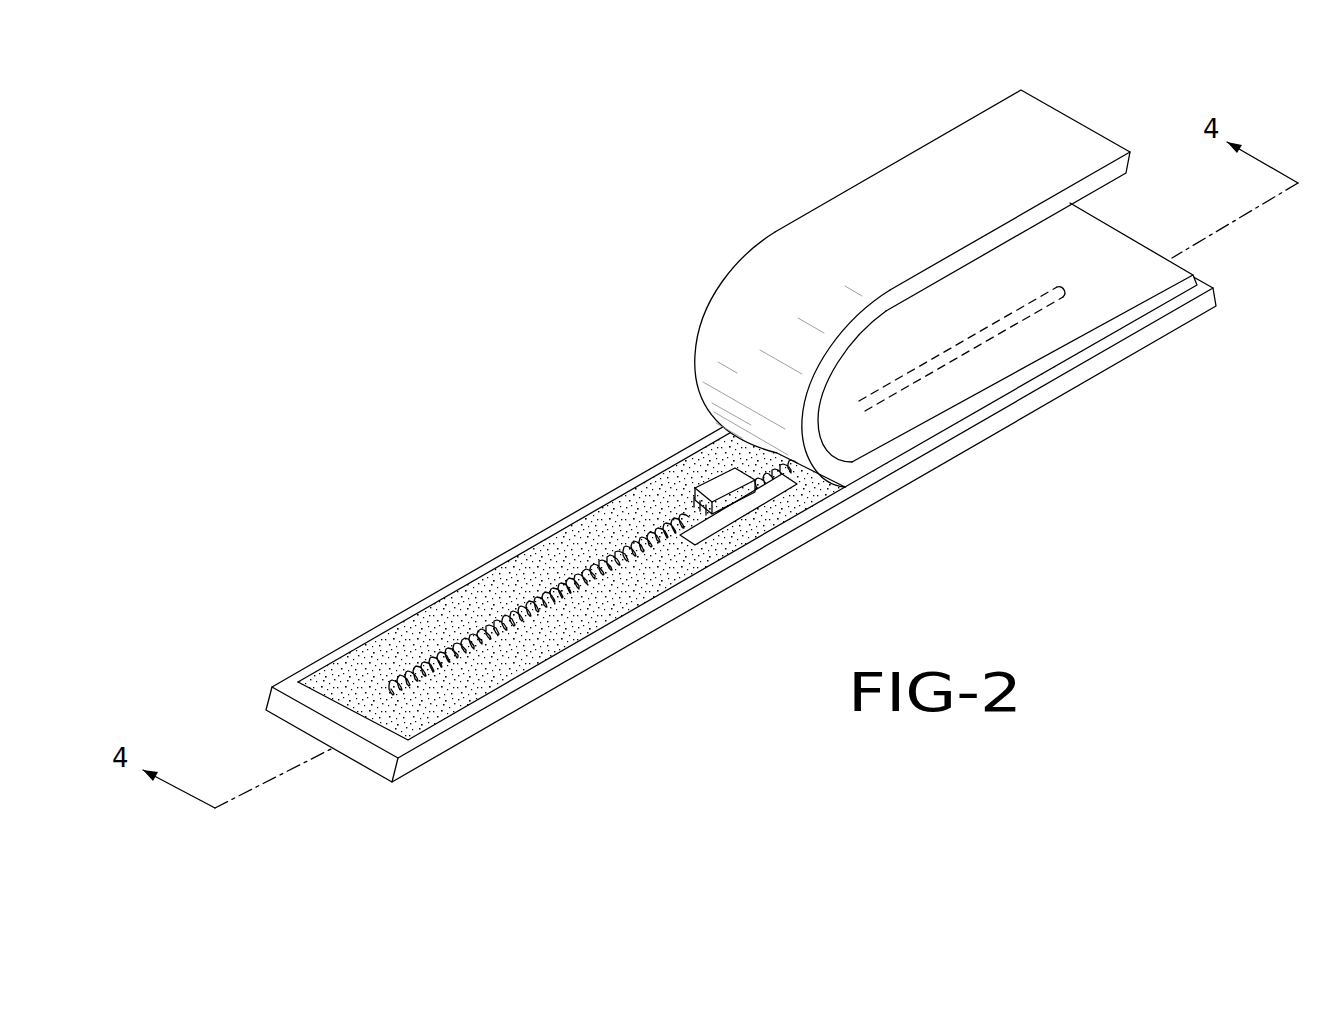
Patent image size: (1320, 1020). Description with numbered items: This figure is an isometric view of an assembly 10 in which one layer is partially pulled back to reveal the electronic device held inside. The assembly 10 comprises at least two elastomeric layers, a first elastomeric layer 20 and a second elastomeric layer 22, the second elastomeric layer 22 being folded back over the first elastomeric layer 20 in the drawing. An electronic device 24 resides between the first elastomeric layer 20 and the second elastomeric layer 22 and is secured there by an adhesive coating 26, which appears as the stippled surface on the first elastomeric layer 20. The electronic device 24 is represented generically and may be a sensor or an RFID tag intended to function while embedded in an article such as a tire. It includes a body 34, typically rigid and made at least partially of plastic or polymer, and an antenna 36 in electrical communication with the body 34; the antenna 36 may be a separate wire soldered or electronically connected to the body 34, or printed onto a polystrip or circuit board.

The assembly 10 is at (503, 270).
The first elastomeric layer 20 is at (478, 563).
The second elastomeric layer 22 is at (880, 195).
The electronic device 24 is at (687, 461).
The adhesive coating 26 is at (605, 532).
The body 34 is at (752, 506).
The antenna 36 is at (548, 600).